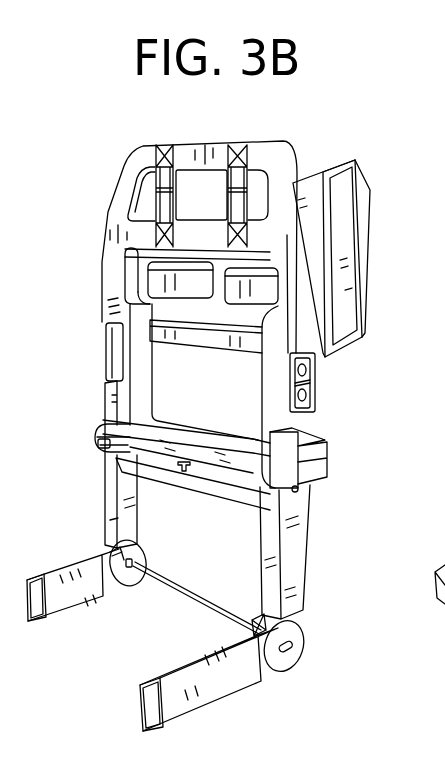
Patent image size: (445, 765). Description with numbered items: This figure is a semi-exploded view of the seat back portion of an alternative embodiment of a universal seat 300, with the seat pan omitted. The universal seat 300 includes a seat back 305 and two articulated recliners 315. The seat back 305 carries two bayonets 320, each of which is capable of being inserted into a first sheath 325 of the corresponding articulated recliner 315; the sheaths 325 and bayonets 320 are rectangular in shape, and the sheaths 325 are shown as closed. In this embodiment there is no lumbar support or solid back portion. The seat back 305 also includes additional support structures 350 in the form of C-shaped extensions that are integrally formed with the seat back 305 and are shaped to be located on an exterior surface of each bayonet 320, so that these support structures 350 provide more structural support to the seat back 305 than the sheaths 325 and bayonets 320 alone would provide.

The universal seat 300 is at (435, 148).
The seat back 305 is at (263, 238).
The articulated recliner 315 is at (126, 572).
The bayonet 320 is at (113, 357).
The first sheath 325 is at (104, 497).
The support structure 350 is at (97, 442).